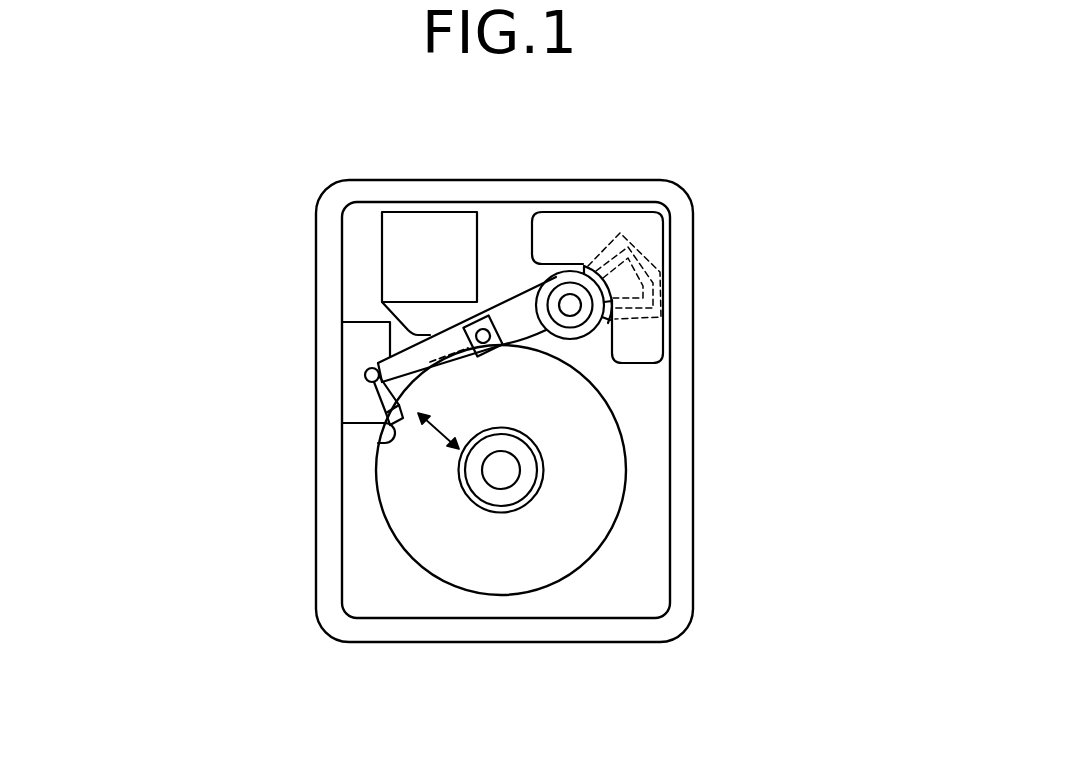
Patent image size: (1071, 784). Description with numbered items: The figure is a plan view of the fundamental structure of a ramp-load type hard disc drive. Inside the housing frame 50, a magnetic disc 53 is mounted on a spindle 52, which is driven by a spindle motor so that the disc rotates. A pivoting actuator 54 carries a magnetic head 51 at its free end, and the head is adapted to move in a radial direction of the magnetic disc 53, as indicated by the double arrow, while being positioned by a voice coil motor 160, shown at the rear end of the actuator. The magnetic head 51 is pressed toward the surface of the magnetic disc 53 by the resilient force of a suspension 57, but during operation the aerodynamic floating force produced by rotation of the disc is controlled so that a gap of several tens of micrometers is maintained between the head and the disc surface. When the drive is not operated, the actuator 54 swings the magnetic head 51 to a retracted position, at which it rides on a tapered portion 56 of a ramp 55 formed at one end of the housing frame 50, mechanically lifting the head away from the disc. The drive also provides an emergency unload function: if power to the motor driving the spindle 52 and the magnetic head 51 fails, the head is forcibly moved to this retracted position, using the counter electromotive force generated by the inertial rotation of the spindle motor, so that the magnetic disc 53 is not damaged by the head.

The housing frame 50 is at (556, 642).
The magnetic head 51 is at (367, 369).
The spindle 52 is at (541, 463).
The magnetic disc 53 is at (618, 518).
The actuator 54 is at (516, 292).
The ramp 55 is at (350, 402).
The tapered portion 56 is at (378, 443).
The suspension 57 is at (424, 367).
The voice coil motor 160 is at (660, 256).